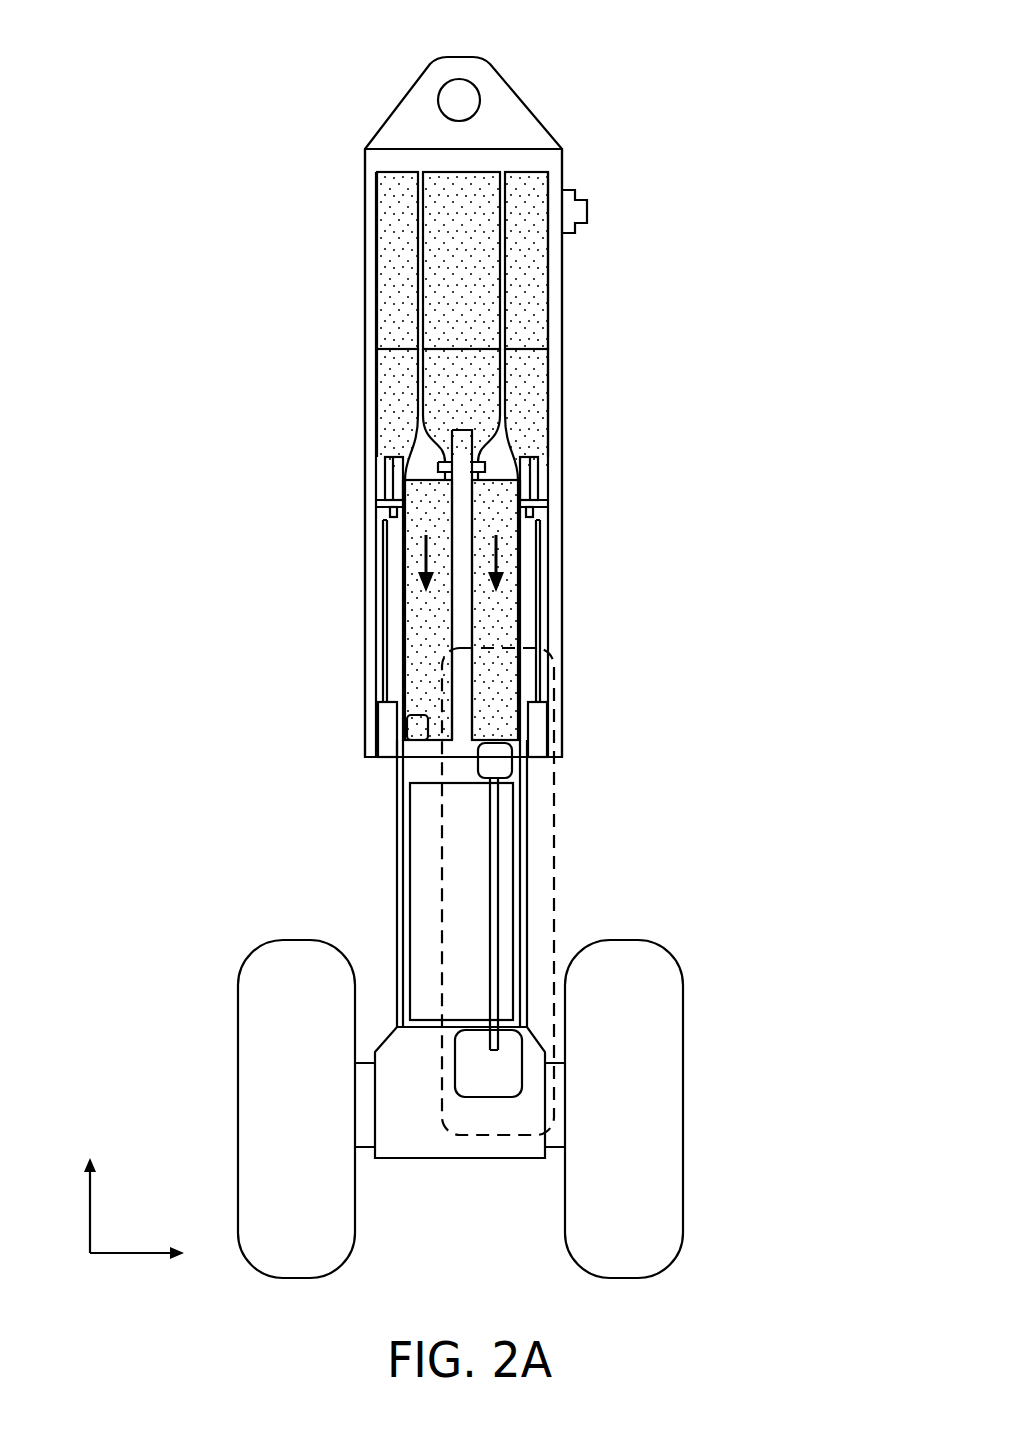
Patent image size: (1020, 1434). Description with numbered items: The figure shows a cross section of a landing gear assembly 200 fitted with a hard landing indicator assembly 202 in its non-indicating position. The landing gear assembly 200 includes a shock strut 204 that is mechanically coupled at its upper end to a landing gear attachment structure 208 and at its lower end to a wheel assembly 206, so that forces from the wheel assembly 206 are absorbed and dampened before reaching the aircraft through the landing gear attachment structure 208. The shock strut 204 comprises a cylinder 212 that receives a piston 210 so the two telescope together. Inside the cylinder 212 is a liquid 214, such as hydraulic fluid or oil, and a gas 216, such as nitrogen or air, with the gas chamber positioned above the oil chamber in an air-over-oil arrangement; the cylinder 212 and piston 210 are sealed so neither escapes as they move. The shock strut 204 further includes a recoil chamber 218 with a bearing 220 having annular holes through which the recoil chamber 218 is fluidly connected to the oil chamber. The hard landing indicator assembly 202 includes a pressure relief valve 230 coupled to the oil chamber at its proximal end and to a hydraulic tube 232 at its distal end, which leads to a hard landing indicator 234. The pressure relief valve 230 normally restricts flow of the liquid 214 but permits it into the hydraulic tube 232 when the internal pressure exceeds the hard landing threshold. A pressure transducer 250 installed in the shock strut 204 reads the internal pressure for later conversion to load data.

The landing gear assembly 200 is at (158, 100).
The hard landing indicator assembly 202 is at (650, 758).
The shock strut 204 is at (364, 293).
The wheel assembly 206 is at (413, 1143).
The landing gear attachment structure 208 is at (428, 100).
The piston 210 is at (398, 797).
The cylinder 212 is at (562, 505).
The liquid 214 is at (527, 398).
The gas 216 is at (527, 308).
The recoil chamber 218 is at (383, 640).
The bearing 220 is at (385, 490).
The pressure relief valve 230 is at (505, 752).
The hydraulic tube 232 is at (500, 878).
The hard landing indicator 234 is at (455, 1050).
The pressure transducer 250 is at (410, 728).